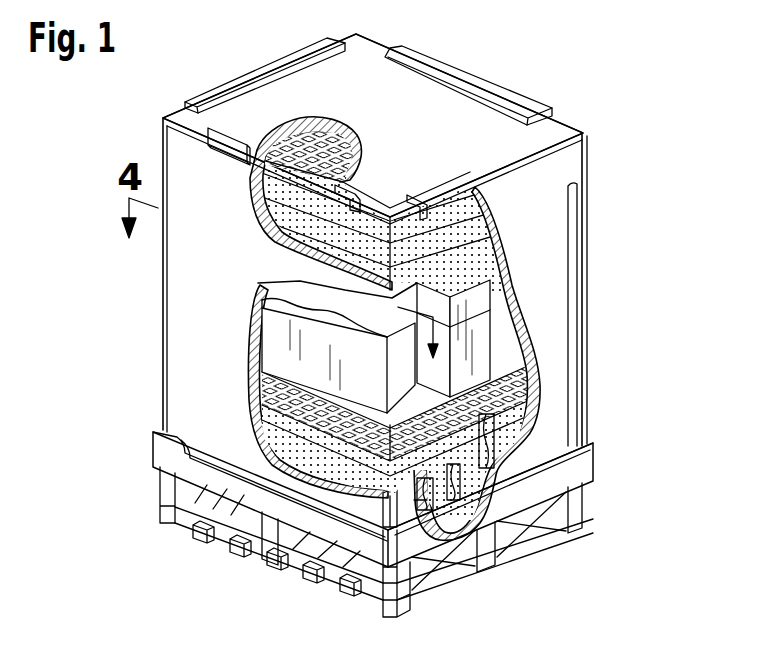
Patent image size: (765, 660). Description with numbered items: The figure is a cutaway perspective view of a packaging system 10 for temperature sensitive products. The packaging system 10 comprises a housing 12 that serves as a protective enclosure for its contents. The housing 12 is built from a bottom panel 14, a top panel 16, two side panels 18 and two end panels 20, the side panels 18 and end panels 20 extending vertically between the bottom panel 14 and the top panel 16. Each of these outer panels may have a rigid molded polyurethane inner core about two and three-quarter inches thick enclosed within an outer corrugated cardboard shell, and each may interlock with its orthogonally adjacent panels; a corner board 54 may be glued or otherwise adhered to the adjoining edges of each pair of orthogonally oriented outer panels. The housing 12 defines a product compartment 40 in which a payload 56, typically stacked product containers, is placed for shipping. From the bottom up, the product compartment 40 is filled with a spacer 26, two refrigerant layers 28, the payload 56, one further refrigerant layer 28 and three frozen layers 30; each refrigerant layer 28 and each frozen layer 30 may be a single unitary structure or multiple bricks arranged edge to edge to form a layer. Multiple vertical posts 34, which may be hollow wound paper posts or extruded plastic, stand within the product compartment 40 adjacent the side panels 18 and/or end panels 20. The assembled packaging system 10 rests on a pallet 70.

The packaging system 10 is at (618, 86).
The housing 12 is at (190, 316).
The bottom panel 14 is at (462, 533).
The top panel 16 is at (493, 120).
The side panels 18 is at (182, 289).
The end panels 20 is at (548, 268).
The spacer 26 is at (520, 487).
The refrigerant layers 28 is at (525, 250).
The frozen layers 30 is at (505, 247).
The vertical posts 34 is at (495, 497).
The product compartment 40 is at (507, 333).
The corner board 54 is at (207, 97).
The payload 56 is at (300, 347).
The pallet 70 is at (153, 489).